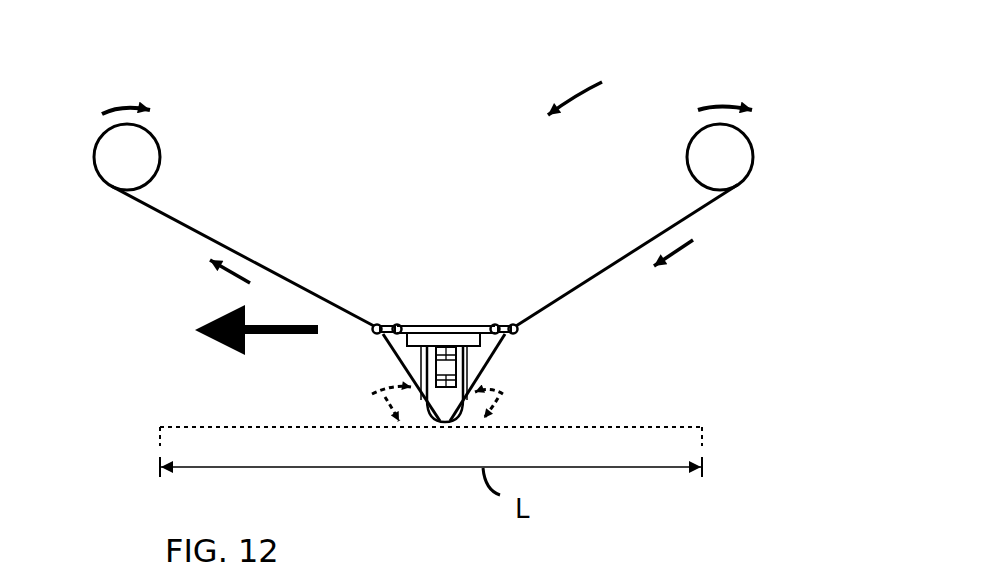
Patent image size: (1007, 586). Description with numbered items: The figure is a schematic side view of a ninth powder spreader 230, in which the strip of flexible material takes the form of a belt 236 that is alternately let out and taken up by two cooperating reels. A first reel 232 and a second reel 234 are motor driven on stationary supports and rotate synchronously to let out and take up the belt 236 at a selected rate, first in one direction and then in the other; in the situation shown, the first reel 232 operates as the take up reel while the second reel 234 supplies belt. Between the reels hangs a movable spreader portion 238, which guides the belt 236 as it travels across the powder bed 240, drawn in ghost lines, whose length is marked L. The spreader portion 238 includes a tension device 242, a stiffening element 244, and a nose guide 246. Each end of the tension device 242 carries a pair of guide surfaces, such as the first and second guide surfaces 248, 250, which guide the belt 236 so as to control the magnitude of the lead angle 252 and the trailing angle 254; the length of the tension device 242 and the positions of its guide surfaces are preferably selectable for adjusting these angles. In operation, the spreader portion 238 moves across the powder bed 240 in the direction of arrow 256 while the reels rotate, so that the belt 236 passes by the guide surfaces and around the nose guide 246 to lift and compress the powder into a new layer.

The ninth powder spreader 230 is at (608, 87).
The first reel 232 is at (107, 168).
The second reel 234 is at (745, 157).
The belt 236 is at (688, 215).
The spreader portion 238 is at (456, 304).
The powder bed 240 is at (617, 422).
The tension device 242 is at (427, 325).
The stiffening element 244 is at (480, 350).
The nose guide 246 is at (456, 400).
The first guide surface 248 is at (400, 323).
The second guide surface 250 is at (374, 334).
The lead angle 252 is at (369, 399).
The trailing angle 254 is at (515, 399).
The arrow 256 is at (283, 334).